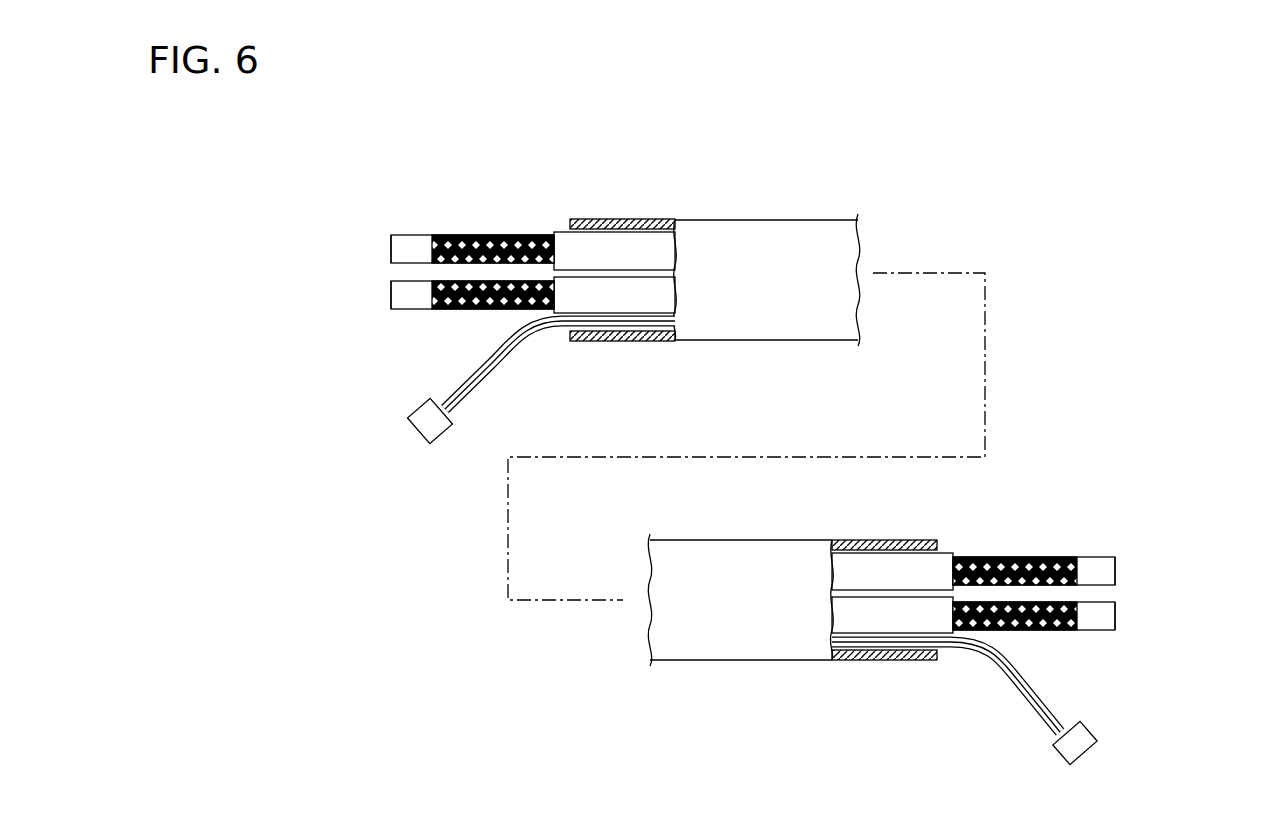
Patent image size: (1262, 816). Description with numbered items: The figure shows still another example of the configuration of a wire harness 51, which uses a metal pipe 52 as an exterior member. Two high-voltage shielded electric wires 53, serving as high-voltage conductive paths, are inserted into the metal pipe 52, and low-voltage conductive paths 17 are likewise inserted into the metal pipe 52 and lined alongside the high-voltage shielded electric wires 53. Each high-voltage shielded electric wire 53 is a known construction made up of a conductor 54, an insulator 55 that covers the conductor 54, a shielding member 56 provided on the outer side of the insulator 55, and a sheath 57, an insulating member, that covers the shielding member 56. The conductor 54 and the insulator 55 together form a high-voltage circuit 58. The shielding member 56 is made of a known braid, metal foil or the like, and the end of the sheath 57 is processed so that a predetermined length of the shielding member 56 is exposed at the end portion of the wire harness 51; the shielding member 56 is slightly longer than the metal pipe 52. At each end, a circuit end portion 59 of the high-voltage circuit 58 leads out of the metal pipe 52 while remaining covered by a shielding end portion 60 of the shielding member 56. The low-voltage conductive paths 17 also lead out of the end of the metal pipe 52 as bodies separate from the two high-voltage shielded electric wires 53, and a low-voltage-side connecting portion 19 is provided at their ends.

The wire harness 51 is at (1008, 190).
The metal pipe 52 is at (812, 232).
The high-voltage shielded electric wire 53 is at (410, 220).
The conductor 54 is at (392, 238).
The insulator 55 is at (393, 245).
The shielding member 56 is at (527, 237).
The sheath 57 is at (633, 240).
The high-voltage circuit 58 is at (290, 192).
The circuit end portion 59 is at (458, 237).
The shielding end portion 60 is at (502, 237).
The low-voltage conductive path 17 is at (468, 392).
The low-voltage-side connecting portion 19 is at (425, 426).